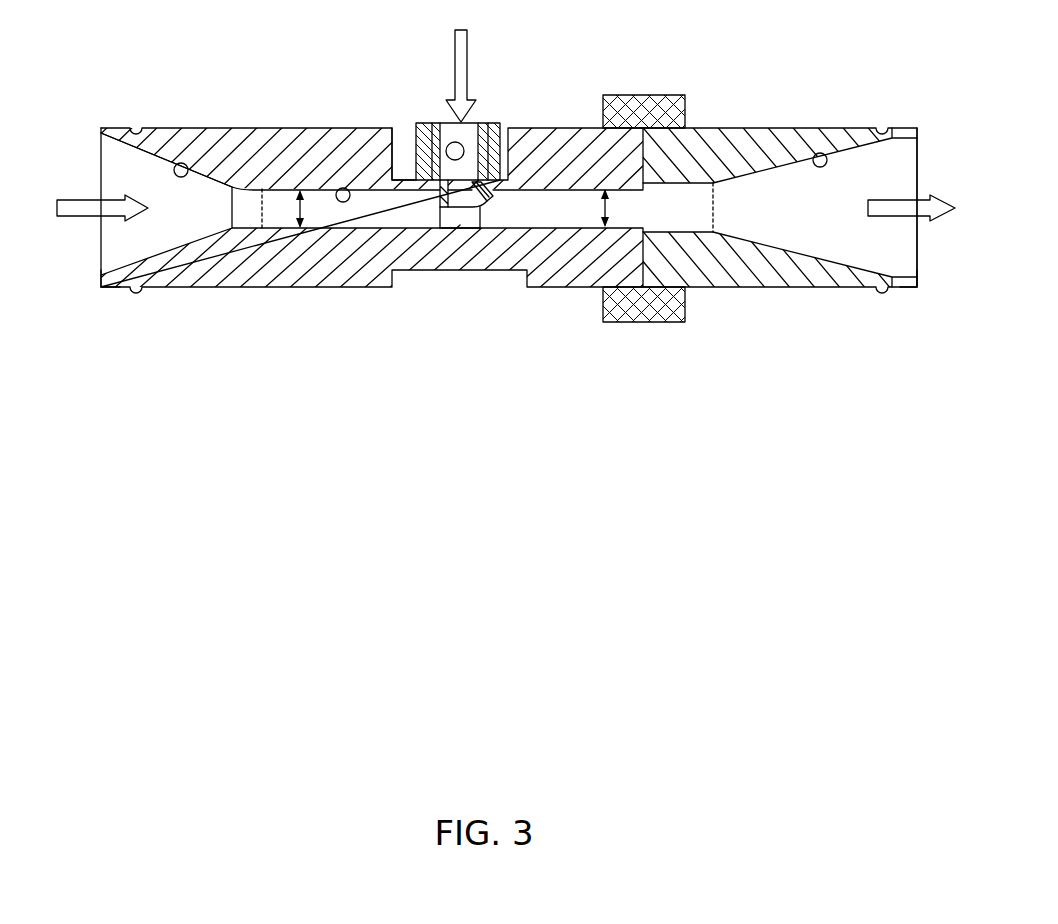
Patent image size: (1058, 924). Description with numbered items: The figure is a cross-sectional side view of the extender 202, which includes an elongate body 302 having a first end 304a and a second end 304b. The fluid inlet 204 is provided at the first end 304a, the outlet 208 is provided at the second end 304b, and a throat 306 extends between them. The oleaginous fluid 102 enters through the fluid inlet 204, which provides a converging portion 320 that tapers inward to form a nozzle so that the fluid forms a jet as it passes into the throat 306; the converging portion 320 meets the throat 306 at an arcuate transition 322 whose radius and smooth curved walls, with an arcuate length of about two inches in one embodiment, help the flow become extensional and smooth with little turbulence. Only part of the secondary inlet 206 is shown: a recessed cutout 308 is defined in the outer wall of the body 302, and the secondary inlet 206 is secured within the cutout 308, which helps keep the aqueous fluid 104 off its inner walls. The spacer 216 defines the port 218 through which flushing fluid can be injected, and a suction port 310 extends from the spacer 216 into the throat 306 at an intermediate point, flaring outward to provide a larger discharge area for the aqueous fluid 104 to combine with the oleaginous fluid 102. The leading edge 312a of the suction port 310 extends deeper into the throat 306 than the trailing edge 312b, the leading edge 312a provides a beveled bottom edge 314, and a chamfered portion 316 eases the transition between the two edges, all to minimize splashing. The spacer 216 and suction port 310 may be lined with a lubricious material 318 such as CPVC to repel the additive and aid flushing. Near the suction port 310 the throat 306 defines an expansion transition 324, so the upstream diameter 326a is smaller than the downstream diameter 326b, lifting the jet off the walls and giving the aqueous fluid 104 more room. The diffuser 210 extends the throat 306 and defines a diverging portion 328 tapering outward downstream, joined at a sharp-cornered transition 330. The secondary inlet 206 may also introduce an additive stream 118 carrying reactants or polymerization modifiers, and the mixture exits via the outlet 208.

The extender 202 is at (174, 65).
The fluid inlet 204 is at (97, 162).
The outlet 208 is at (902, 158).
The secondary inlet 206 is at (514, 127).
The diffuser 210 is at (752, 127).
The spacer 216 is at (430, 122).
The port 218 is at (460, 143).
The elongate body 302 is at (272, 288).
The first end 304a is at (104, 295).
The second end 304b is at (914, 296).
The throat 306 is at (343, 188).
The cutout 308 is at (412, 178).
The suction port 310 is at (494, 180).
The leading edge 312a is at (430, 215).
The trailing edge 312b is at (490, 205).
The beveled bottom edge 314 is at (440, 183).
The chamfered portion 316 is at (470, 210).
The lubricious material 318 is at (492, 124).
The converging portion 320 is at (181, 163).
The arcuate transition 322 is at (246, 178).
The expansion transition 324 is at (457, 238).
The upstream throat diameter 326a is at (298, 212).
The downstream throat diameter 326b is at (604, 234).
The diverging portion 328 is at (820, 153).
The transition 330 is at (713, 177).
The oleaginous fluid 102 is at (82, 218).
The aqueous fluid 104 is at (455, 52).
The additive stream 118 is at (910, 218).